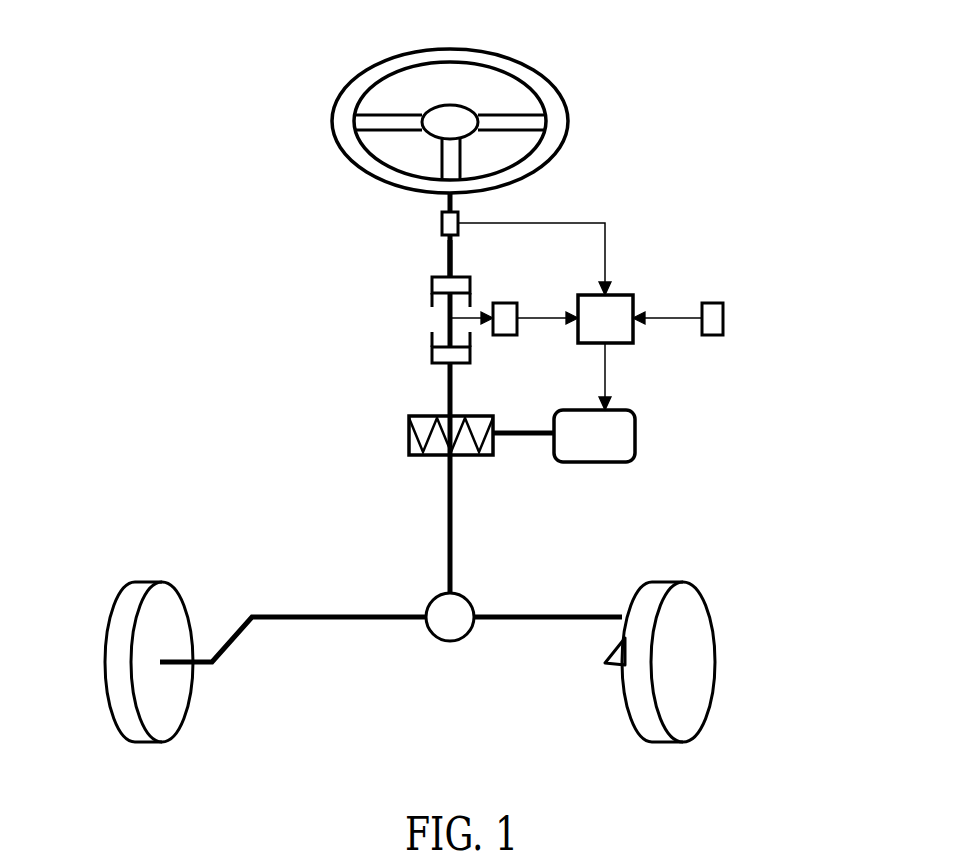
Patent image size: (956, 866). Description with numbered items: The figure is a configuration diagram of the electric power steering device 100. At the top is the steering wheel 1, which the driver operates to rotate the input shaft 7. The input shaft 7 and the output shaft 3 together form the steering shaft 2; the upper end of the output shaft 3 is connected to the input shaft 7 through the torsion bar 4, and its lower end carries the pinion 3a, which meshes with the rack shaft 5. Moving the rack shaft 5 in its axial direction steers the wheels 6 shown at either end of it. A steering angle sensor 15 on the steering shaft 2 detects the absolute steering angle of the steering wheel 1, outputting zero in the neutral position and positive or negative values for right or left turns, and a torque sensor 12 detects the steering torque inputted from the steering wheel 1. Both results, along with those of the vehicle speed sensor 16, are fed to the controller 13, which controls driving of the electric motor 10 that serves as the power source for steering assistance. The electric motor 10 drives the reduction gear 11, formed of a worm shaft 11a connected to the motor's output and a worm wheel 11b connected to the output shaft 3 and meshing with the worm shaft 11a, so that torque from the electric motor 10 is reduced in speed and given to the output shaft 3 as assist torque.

The steering wheel 1 is at (538, 85).
The steering shaft 2 is at (432, 260).
The output shaft 3 is at (448, 385).
The pinion 3a is at (458, 607).
The torsion bar 4 is at (443, 311).
The rack shaft 5 is at (325, 620).
The wheels 6 is at (168, 600).
The input shaft 7 is at (447, 262).
The electric motor 10 is at (598, 452).
The reduction gear 11 is at (433, 465).
The worm shaft 11a is at (528, 437).
The worm wheel 11b is at (418, 450).
The torque sensor 12 is at (504, 313).
The controller 13 is at (620, 330).
The steering angle sensor 15 is at (453, 222).
The vehicle speed sensor 16 is at (712, 316).
The electric power steering device 100 is at (632, 221).